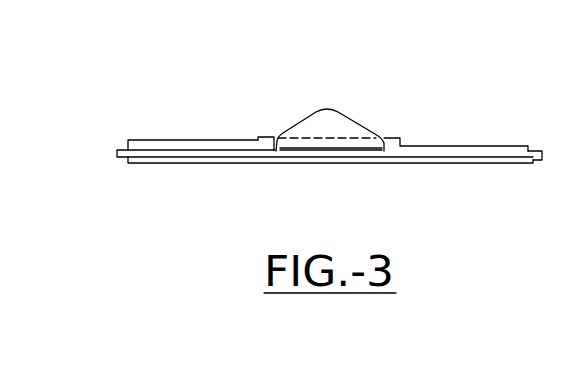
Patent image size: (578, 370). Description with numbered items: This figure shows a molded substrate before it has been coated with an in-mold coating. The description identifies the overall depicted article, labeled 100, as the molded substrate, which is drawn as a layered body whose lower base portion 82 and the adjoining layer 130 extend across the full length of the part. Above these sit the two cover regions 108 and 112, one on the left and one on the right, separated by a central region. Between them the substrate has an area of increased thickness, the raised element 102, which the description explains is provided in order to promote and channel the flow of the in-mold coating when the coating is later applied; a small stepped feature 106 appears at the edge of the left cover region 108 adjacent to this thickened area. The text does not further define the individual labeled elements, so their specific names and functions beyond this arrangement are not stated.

The electronic package assembly 100 is at (193, 178).
The substrate base layer 82 is at (357, 165).
The intermediate layer 130 is at (115, 152).
The left cover layer 108 is at (180, 140).
The raised portion / contact 106 is at (273, 137).
The encapsulated die (dome) 102 is at (351, 120).
The right cover layer 112 is at (492, 146).